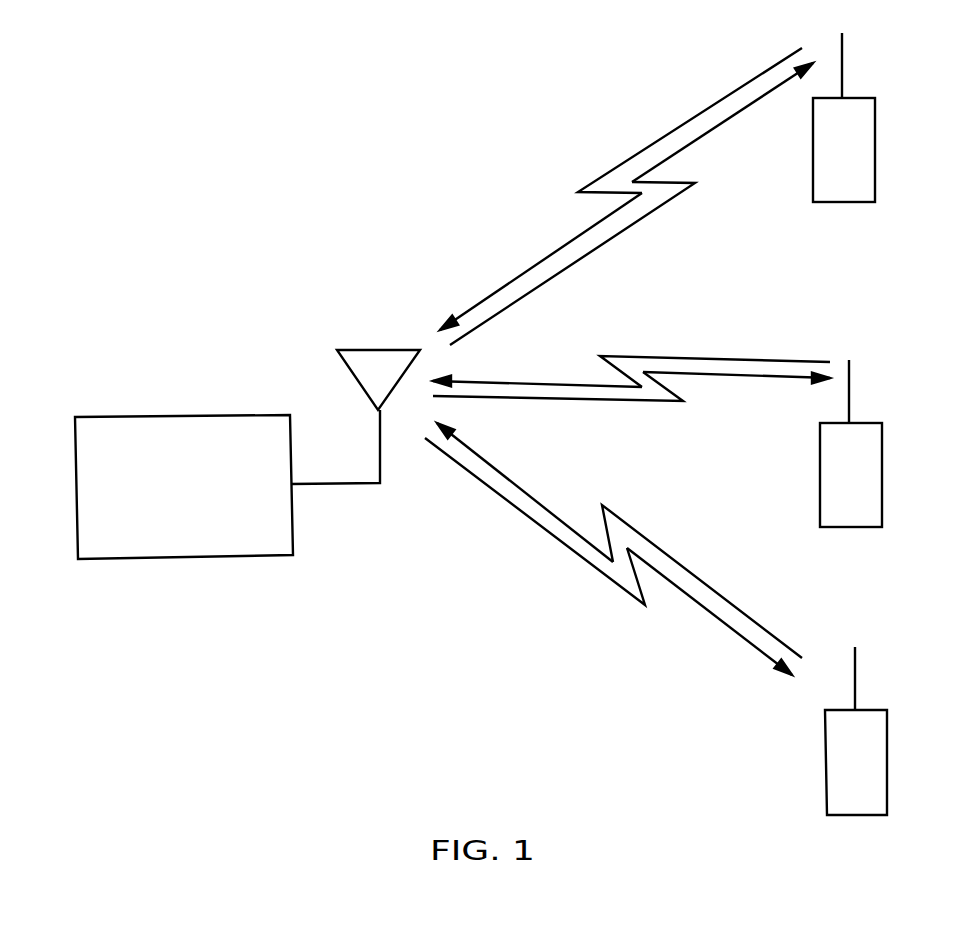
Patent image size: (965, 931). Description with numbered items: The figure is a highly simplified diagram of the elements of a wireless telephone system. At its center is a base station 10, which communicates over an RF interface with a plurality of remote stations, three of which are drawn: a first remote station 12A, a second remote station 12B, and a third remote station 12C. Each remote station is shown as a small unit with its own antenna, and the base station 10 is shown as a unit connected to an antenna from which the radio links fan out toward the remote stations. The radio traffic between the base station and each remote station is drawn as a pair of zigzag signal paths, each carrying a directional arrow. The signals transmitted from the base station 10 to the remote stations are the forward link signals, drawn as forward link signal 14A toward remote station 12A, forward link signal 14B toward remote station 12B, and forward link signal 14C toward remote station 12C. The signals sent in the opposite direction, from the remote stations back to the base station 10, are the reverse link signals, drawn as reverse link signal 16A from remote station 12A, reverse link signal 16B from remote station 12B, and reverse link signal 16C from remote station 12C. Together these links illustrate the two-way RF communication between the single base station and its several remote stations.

The base station 10 is at (132, 417).
The remote station 12A is at (858, 98).
The remote station 12B is at (867, 423).
The remote station 12C is at (870, 710).
The forward link signal 14A is at (632, 226).
The forward link signal 14B is at (645, 405).
The forward link signal 14C is at (595, 570).
The reverse link signal 16A is at (682, 127).
The reverse link signal 16B is at (702, 357).
The reverse link signal 16C is at (657, 543).